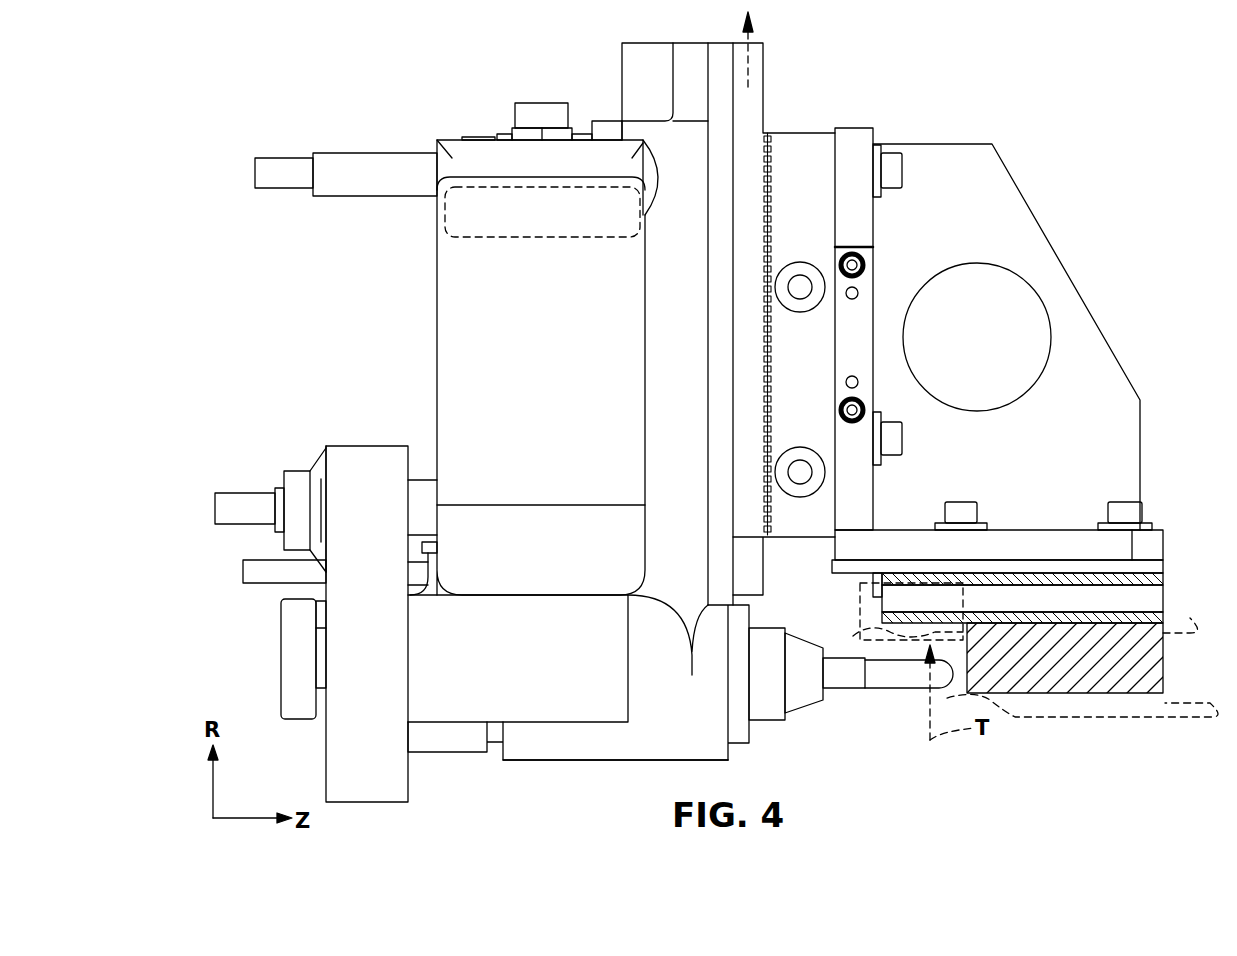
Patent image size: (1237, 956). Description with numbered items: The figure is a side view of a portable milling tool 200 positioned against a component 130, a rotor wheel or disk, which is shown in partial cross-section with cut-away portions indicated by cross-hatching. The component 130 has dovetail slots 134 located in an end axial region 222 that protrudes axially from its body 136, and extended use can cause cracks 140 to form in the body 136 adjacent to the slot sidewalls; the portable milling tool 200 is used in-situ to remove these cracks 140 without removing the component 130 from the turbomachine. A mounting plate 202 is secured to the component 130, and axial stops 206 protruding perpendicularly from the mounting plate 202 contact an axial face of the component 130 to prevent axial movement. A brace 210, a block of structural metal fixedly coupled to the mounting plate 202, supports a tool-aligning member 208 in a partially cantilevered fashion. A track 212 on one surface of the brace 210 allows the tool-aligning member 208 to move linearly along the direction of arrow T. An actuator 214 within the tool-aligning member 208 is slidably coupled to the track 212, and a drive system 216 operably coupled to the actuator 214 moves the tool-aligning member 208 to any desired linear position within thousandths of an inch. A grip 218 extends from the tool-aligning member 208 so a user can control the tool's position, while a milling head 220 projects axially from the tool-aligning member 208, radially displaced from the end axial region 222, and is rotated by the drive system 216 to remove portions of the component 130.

The component 130 is at (1145, 694).
The dovetail slots 134 is at (1163, 597).
The body 136 is at (1108, 671).
The cracks 140 is at (897, 612).
The portable milling tool 200 is at (313, 430).
The mounting plate 202 is at (835, 563).
The axial stops 206 is at (867, 588).
The tool-aligning member 208 is at (570, 775).
The brace 210 is at (1000, 233).
The track 212 is at (772, 197).
The actuator 214 is at (556, 226).
The drive system 216 is at (693, 725).
The grip 218 is at (368, 172).
The milling head 220 is at (892, 675).
The end axial region 222 is at (867, 612).